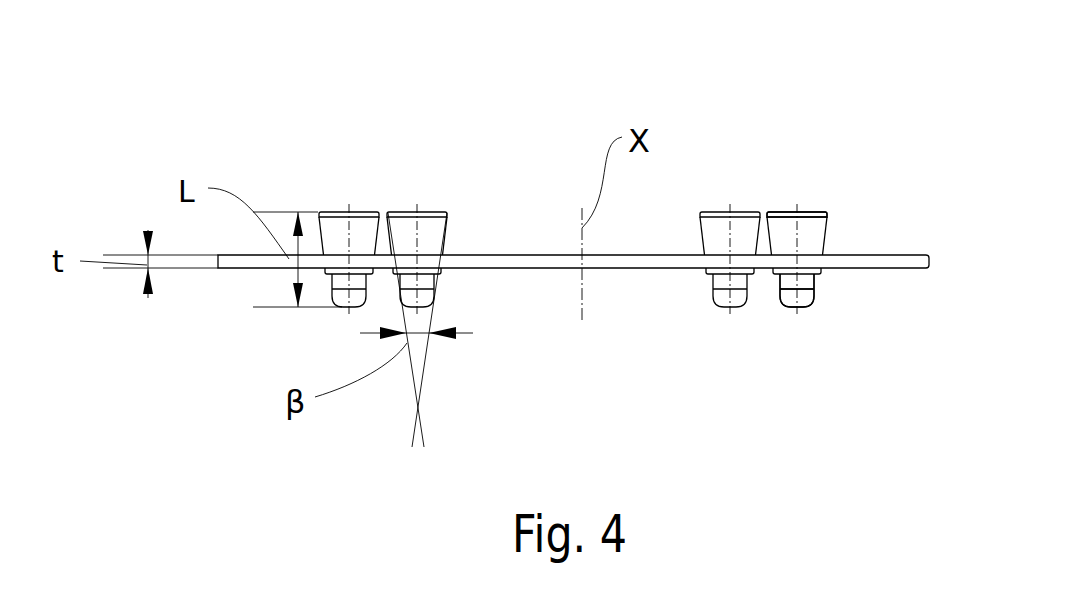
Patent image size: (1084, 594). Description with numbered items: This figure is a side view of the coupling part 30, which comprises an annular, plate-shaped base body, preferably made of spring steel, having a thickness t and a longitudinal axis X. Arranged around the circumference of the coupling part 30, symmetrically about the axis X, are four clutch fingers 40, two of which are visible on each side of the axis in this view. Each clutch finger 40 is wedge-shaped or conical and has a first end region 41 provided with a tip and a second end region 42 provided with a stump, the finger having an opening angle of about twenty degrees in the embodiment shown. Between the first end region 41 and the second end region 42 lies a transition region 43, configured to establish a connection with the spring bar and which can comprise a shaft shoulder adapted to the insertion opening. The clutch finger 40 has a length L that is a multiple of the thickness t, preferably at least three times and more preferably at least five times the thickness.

The coupling part 30 is at (243, 78).
The clutch finger 40 is at (346, 176).
The first end region 41 is at (803, 282).
The second end region 42 is at (797, 212).
The transition region 43 is at (815, 292).